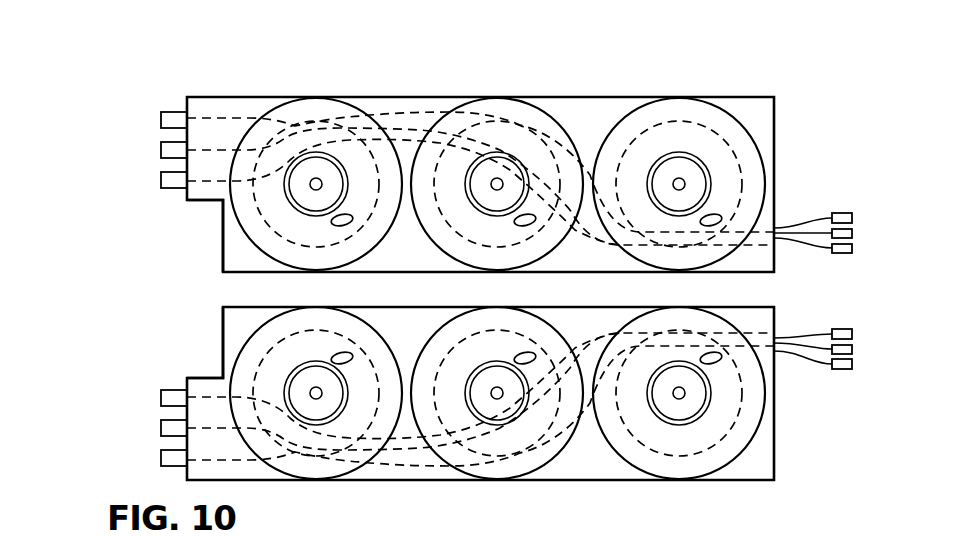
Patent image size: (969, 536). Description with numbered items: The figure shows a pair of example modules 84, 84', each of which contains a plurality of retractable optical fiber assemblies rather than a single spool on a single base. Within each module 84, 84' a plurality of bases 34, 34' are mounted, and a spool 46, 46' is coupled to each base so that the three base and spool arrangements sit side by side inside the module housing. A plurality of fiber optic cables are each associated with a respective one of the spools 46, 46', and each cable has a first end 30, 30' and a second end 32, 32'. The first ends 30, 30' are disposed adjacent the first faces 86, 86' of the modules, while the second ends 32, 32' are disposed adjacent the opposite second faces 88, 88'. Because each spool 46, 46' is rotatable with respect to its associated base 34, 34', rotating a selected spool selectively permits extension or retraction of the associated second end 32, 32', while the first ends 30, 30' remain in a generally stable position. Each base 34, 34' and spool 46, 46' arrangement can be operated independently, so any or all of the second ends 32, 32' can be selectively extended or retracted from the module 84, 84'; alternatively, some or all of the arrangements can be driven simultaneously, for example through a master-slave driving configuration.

The module 84 is at (492, 144).
The module 84' is at (454, 413).
The first face 86 is at (517, 164).
The first face 86' is at (517, 418).
The second face 88 is at (151, 236).
The second face 88' is at (166, 336).
The second end 32 is at (146, 148).
The second end 32' is at (145, 427).
The first end 30 is at (839, 231).
The first end 30' is at (839, 354).
The base 34 is at (497, 158).
The base 34' is at (497, 416).
The spool 46 is at (480, 150).
The spool 46' is at (480, 431).